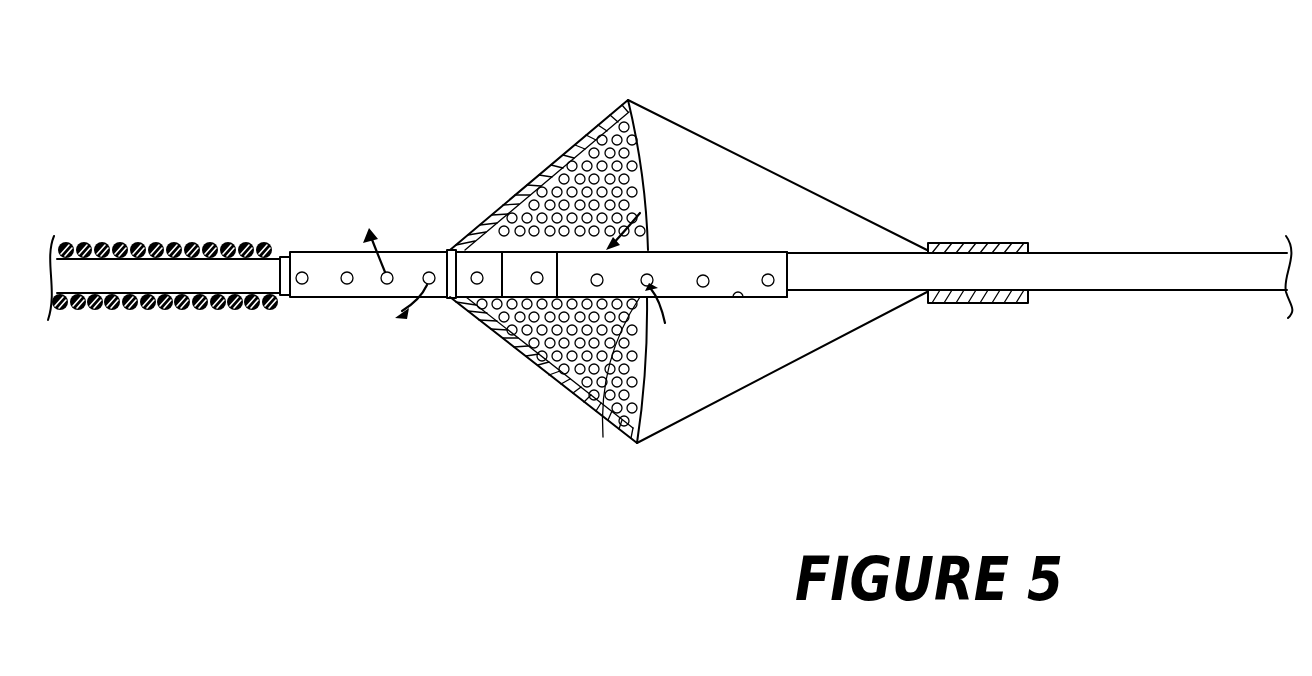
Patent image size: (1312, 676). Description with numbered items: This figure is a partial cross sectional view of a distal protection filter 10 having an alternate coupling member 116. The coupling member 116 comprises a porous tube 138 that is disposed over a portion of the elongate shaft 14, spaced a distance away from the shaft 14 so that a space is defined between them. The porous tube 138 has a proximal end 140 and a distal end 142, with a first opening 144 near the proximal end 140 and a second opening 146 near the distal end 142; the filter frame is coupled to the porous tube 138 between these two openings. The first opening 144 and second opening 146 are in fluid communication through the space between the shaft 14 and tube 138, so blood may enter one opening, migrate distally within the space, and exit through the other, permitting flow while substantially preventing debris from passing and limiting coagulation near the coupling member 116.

The distal protection filter 10 is at (543, 167).
The elongate shaft 14 is at (1047, 267).
The coupling member 116 is at (698, 240).
The porous tube 138 is at (413, 252).
The proximal end 140 is at (772, 250).
The distal end 142 is at (300, 250).
The first opening 144 is at (610, 413).
The second opening 146 is at (384, 288).